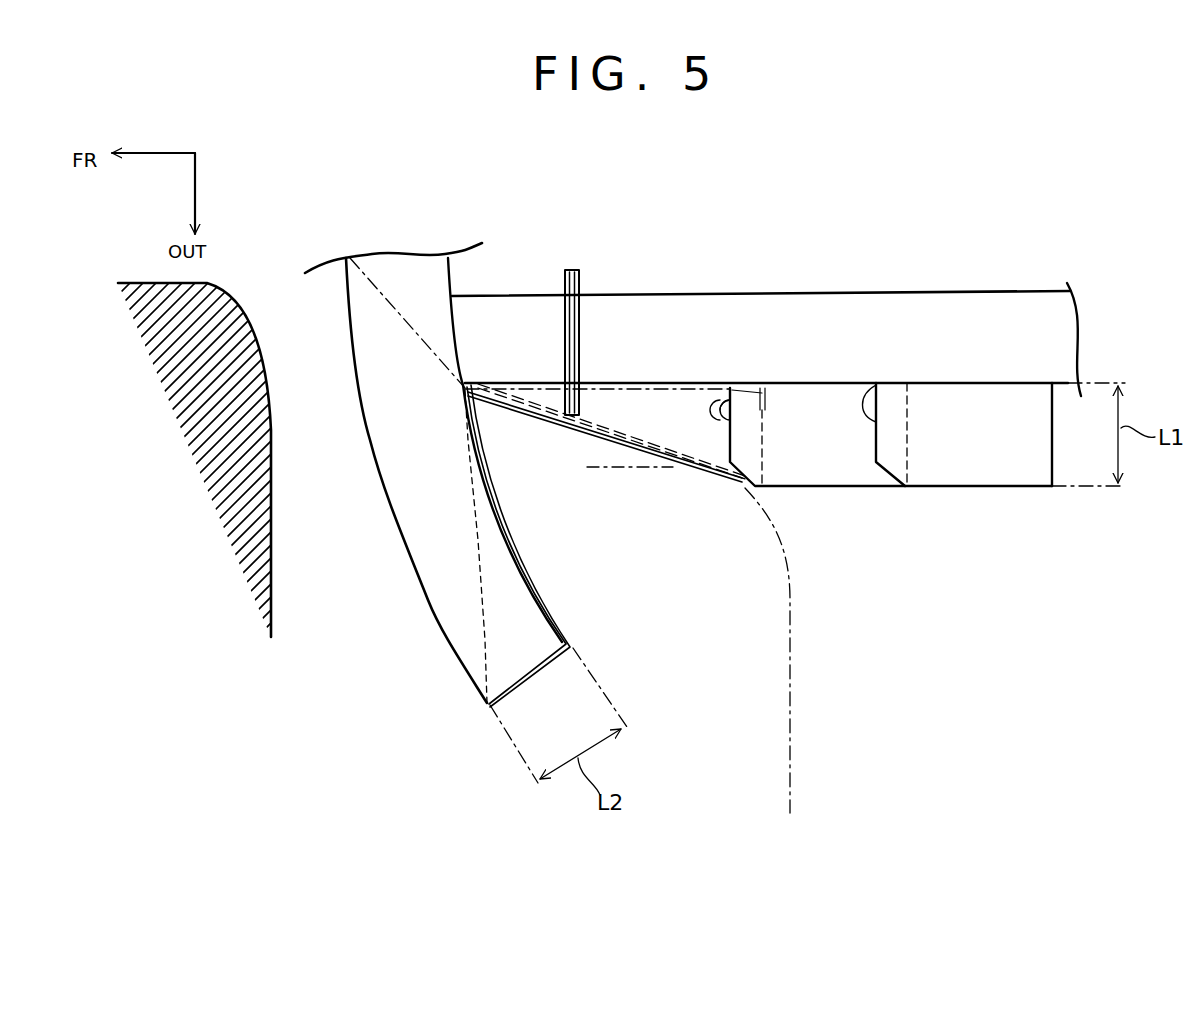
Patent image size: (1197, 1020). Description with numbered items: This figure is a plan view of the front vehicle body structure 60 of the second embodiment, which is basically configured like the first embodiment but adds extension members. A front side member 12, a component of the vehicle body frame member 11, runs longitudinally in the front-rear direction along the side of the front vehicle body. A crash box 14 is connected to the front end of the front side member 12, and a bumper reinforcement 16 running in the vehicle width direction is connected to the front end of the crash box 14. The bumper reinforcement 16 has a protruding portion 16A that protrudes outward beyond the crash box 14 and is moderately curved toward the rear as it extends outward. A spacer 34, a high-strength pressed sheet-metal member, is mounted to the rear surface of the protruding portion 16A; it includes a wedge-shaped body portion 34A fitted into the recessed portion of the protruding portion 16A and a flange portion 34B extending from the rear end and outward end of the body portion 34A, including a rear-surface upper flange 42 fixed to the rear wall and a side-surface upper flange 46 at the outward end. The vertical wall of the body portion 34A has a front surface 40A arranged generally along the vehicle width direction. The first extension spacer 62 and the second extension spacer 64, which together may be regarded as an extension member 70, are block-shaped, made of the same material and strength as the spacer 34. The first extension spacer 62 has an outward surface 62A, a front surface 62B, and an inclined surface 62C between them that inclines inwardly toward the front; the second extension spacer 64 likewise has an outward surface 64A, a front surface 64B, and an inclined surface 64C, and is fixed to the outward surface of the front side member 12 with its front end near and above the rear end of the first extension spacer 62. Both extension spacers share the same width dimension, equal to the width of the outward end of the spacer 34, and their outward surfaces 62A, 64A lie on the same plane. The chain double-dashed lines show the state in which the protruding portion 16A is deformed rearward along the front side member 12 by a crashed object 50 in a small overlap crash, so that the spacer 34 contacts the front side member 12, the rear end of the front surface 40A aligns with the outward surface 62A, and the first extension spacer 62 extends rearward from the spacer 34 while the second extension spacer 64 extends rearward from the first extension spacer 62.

The vehicle body frame member 11 is at (761, 293).
The front side member 12 is at (897, 290).
The crash box 14 is at (518, 292).
The bumper reinforcement 16 is at (346, 347).
The protruding portion 16A is at (383, 497).
The spacer 34 is at (634, 382).
The body portion 34A is at (683, 432).
The flange portion 34B is at (683, 383).
The front surface 40A is at (477, 573).
The rear-surface upper flange 42 is at (520, 522).
The side-surface upper flange 46 is at (520, 688).
The crashed object 50 is at (208, 297).
The front vehicle body structure 60 is at (690, 238).
The first extension spacer 62 is at (802, 492).
The outward surface 62A is at (850, 490).
The front surface 62B is at (762, 390).
The inclined surface 62C is at (744, 492).
The second extension spacer 64 is at (964, 479).
The outward surface 64A is at (1013, 488).
The front surface 64B is at (866, 402).
The inclined surface 64C is at (898, 490).
The extension member 70 is at (965, 490).